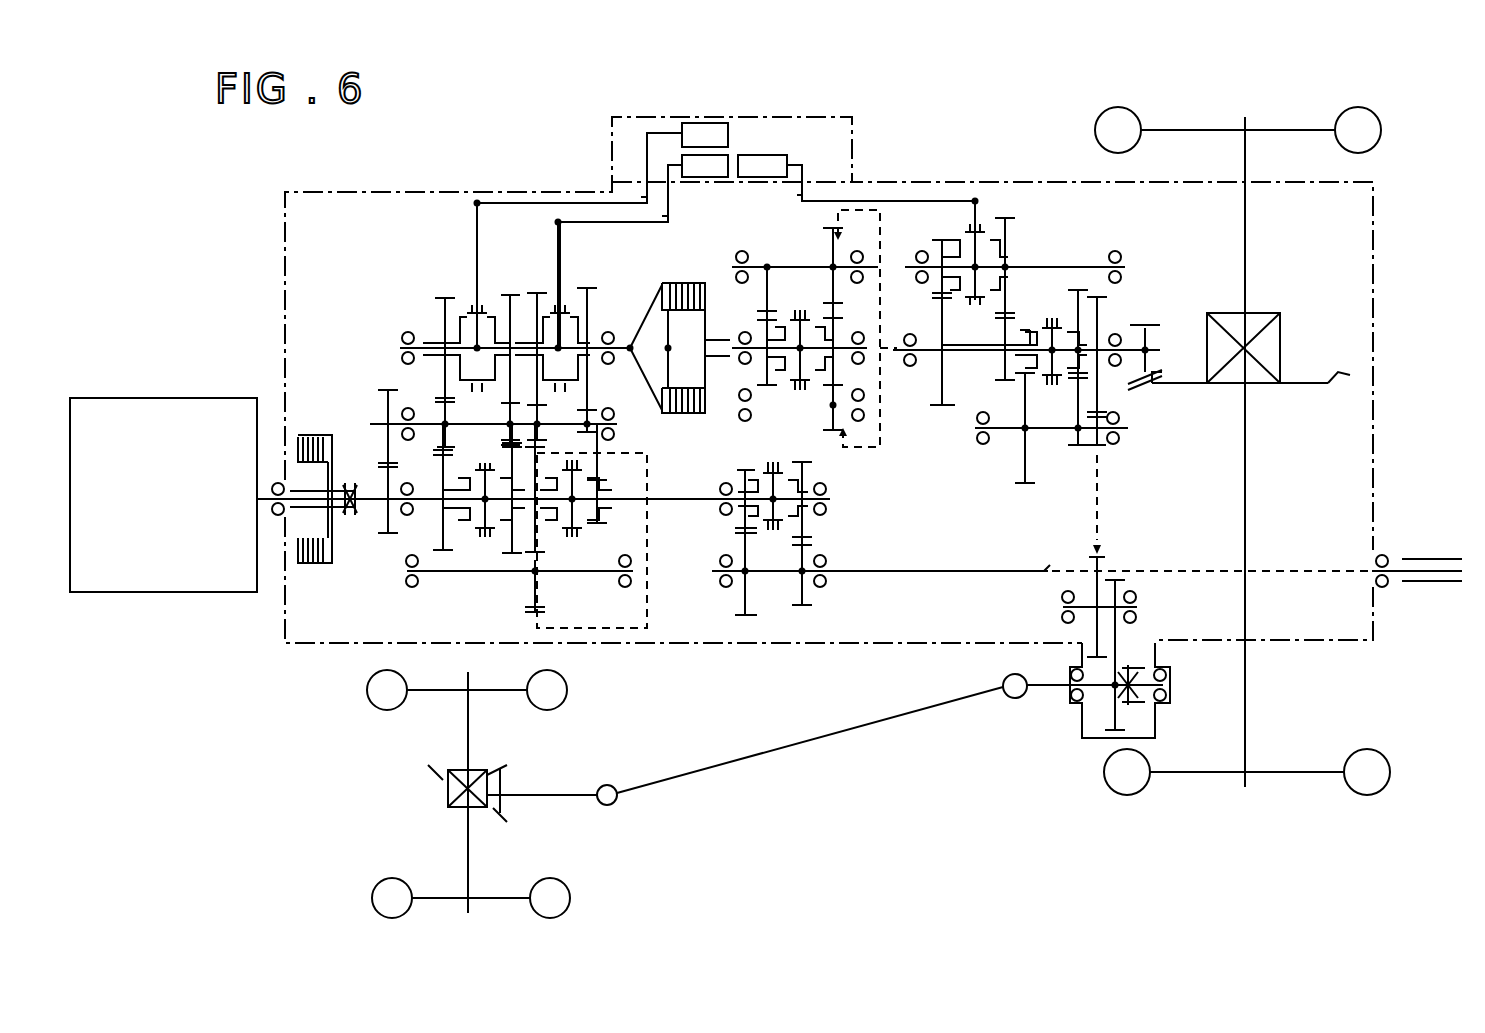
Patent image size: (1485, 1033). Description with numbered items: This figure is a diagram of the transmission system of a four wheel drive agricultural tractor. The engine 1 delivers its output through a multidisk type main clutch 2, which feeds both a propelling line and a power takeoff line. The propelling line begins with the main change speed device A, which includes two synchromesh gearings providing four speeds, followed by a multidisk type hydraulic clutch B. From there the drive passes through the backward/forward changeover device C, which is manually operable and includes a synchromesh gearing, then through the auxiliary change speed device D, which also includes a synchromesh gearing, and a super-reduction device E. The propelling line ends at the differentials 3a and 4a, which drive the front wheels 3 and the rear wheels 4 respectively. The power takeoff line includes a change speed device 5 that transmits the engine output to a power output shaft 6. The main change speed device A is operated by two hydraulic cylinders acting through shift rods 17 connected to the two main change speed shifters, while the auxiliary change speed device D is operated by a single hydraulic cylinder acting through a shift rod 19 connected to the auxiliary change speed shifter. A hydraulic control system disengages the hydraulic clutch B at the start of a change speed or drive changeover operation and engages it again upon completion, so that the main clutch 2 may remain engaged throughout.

The engine 1 is at (172, 397).
The main clutch 2 is at (315, 432).
The front wheels 3 is at (567, 695).
The differential 3a is at (448, 785).
The rear wheels 4 is at (1352, 107).
The differential 4a is at (1280, 332).
The change speed device 5 is at (488, 552).
The power output shaft 6 is at (1432, 560).
The shift rods 17 is at (597, 222).
The shift rod 19 is at (900, 198).
The main change speed device A is at (455, 290).
The hydraulic clutch B is at (665, 282).
The backward/forward changeover device C is at (782, 412).
The auxiliary change speed device D is at (1018, 240).
The super-reduction device E is at (1052, 312).